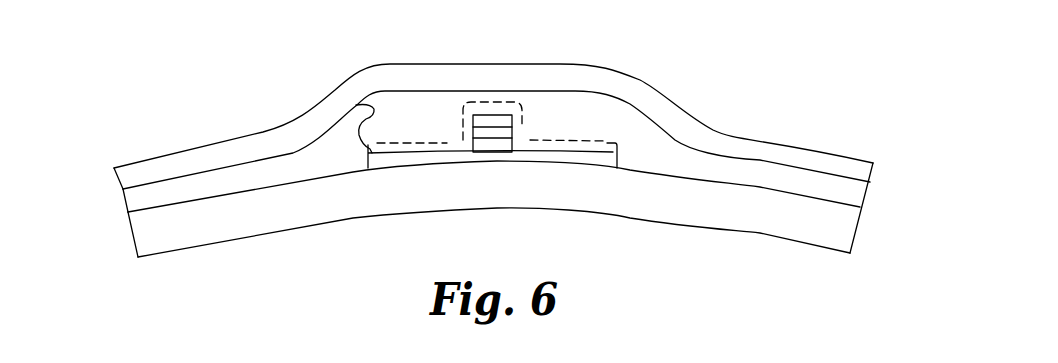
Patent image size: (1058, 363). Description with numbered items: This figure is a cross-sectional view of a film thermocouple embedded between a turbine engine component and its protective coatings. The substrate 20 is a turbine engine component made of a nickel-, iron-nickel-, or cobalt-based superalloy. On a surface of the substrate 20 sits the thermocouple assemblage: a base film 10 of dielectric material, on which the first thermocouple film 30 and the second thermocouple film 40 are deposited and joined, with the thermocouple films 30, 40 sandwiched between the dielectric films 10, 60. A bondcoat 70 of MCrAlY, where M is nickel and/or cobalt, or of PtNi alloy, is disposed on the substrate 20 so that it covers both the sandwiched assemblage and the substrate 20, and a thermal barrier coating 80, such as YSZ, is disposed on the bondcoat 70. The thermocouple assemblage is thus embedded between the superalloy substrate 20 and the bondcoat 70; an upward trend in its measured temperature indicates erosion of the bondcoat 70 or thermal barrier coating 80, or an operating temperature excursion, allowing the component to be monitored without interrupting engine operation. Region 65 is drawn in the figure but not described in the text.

The base film 10 is at (620, 158).
The substrate 20 is at (853, 232).
The first thermocouple film 30 is at (462, 141).
The second thermocouple film 40 is at (512, 121).
The dielectric film 60 is at (358, 105).
The base layer 65 is at (518, 133).
The bondcoat 70 is at (137, 203).
The thermal barrier coating 80 is at (125, 178).